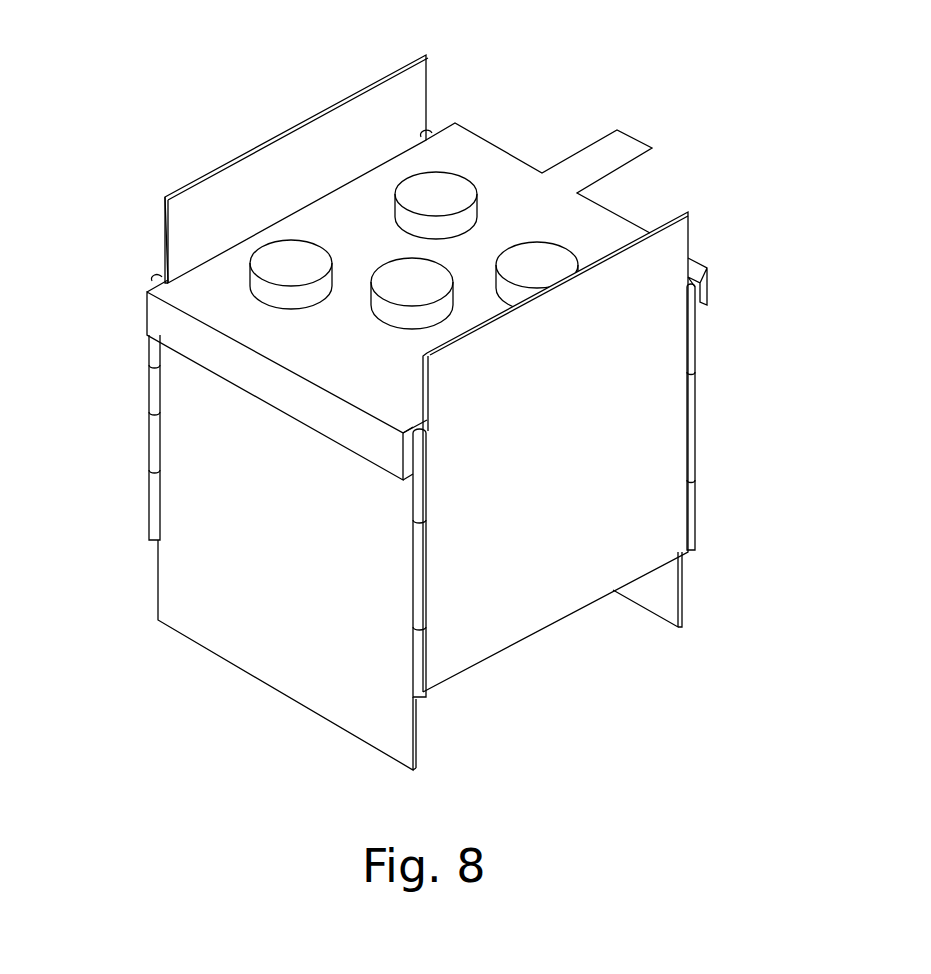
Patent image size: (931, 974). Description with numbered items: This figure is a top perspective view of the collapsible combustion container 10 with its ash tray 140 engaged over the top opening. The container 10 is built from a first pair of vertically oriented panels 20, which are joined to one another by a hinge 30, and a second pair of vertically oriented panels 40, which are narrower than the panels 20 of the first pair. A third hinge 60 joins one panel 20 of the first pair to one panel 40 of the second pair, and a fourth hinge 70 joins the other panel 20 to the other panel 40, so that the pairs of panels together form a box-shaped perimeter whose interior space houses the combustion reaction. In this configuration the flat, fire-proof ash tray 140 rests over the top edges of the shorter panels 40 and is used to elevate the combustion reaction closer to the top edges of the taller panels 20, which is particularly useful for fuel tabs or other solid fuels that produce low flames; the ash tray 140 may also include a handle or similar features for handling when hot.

The container 10 is at (198, 100).
The ash tray 140 is at (222, 295).
The second pair of vertically oriented panels 40 is at (340, 102).
The first pair of vertically oriented panels 20 is at (317, 677).
The third hinge 60 is at (150, 488).
The hinge 30 is at (422, 548).
The fourth hinge 70 is at (695, 353).